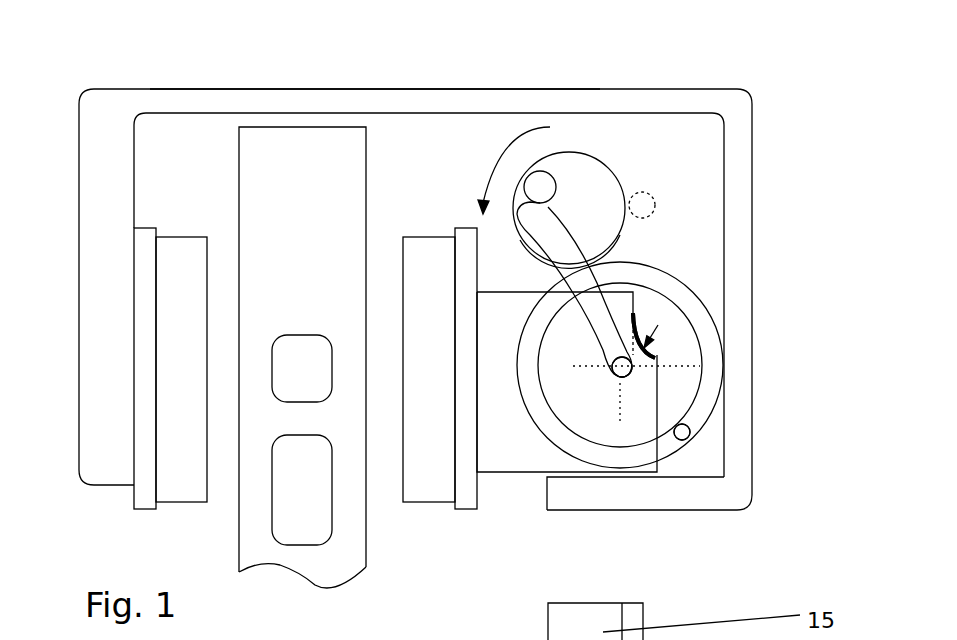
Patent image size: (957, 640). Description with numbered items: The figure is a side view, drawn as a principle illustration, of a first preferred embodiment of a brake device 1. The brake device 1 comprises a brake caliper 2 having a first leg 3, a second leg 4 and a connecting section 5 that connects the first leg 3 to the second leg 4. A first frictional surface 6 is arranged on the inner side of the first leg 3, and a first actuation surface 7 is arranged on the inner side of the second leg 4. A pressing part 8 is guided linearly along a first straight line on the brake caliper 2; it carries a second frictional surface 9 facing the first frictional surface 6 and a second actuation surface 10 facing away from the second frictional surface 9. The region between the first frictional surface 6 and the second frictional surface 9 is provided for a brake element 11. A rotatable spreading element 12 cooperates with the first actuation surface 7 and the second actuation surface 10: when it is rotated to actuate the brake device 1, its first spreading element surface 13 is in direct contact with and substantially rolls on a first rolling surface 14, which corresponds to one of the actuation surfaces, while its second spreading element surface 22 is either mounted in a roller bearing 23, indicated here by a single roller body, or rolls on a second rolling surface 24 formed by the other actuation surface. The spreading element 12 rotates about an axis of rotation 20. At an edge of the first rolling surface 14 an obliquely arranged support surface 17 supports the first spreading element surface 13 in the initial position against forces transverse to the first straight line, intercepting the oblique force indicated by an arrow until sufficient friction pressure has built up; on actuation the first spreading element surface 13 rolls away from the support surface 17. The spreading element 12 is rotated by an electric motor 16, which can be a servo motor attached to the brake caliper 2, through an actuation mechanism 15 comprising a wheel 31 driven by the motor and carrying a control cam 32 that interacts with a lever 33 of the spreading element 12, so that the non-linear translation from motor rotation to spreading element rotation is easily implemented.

The brake device 1 is at (777, 72).
The brake caliper 2 is at (463, 100).
The first leg 3 is at (95, 167).
The second leg 4 is at (738, 200).
The connecting section 5 is at (210, 107).
The first frictional surface 6 is at (217, 263).
The first actuation surface 7 is at (710, 382).
The pressing part 8 is at (493, 380).
The second frictional surface 9 is at (391, 252).
The second actuation surface 10 is at (652, 299).
The brake element 11 is at (255, 175).
The spreading element 12 is at (685, 408).
The first spreading element surface 13 is at (633, 309).
The first rolling surface 14 is at (644, 335).
The actuation mechanism 15 is at (594, 178).
The electric motor 16 is at (643, 202).
The support surface 17 is at (641, 350).
The axis of rotation 20 is at (613, 368).
The second spreading element surface 22 is at (714, 350).
The roller bearing 23 is at (690, 437).
The second rolling surface 24 is at (622, 367).
The wheel 31 is at (607, 197).
The control cam 32 is at (550, 173).
The lever 33 is at (582, 266).